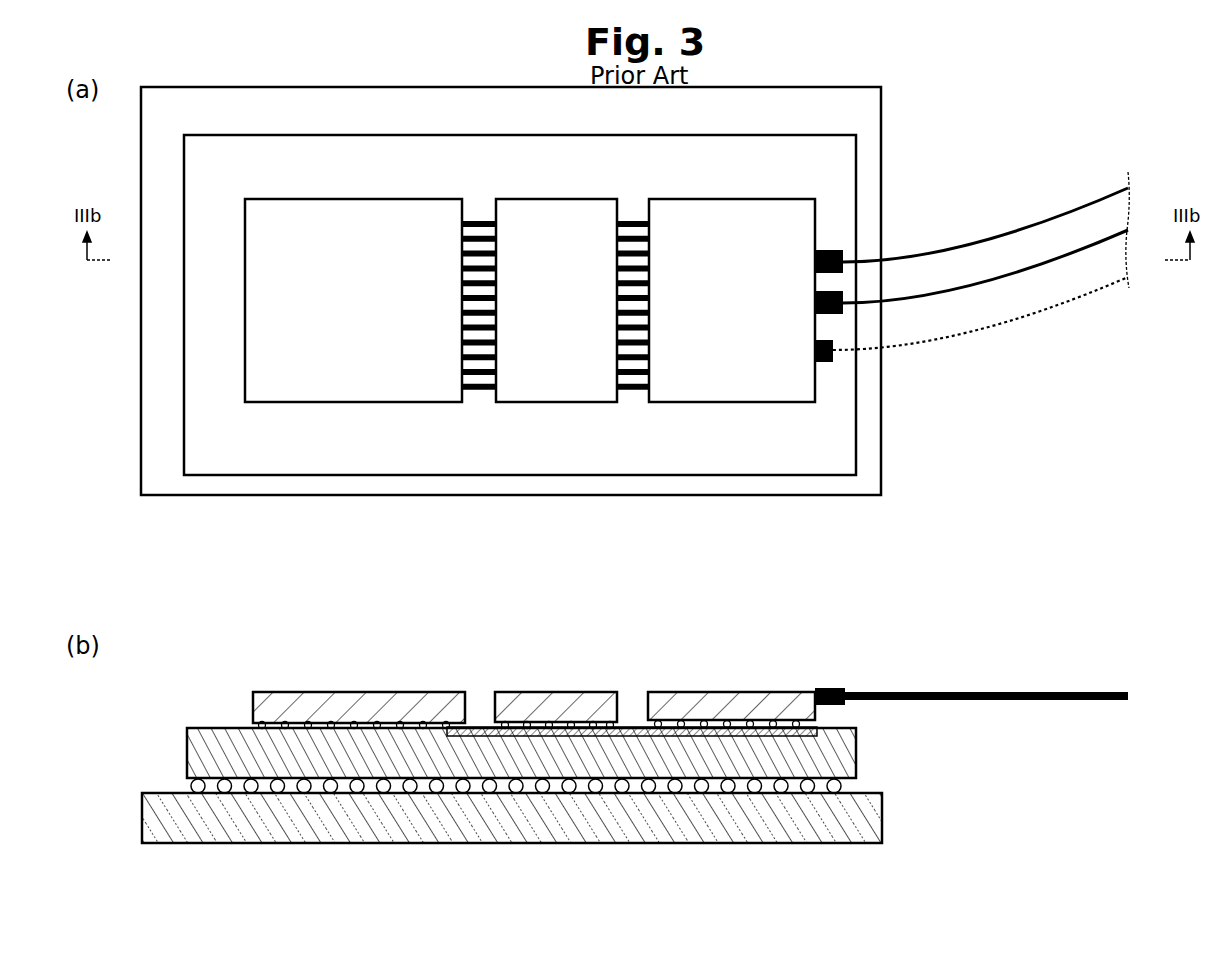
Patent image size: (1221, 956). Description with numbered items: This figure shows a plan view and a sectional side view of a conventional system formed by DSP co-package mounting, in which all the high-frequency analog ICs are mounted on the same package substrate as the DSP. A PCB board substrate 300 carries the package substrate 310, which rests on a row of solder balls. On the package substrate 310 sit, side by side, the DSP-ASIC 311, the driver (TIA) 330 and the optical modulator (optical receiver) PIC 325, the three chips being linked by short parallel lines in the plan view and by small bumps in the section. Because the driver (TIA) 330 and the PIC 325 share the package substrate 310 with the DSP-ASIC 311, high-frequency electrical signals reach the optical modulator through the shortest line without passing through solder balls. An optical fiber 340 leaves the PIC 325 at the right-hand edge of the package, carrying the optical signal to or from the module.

The PCB board substrate 300 is at (162, 483).
The package substrate 310 is at (214, 460).
The DSP-ASIC 311 is at (358, 402).
The driver/TIA 330 is at (565, 402).
The PIC 325 is at (750, 402).
The optical fiber 340 is at (950, 257).